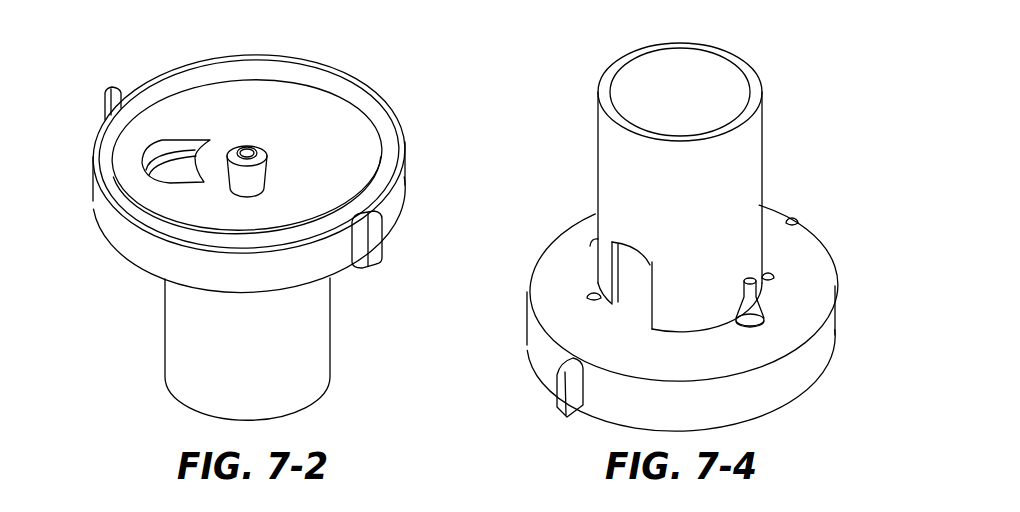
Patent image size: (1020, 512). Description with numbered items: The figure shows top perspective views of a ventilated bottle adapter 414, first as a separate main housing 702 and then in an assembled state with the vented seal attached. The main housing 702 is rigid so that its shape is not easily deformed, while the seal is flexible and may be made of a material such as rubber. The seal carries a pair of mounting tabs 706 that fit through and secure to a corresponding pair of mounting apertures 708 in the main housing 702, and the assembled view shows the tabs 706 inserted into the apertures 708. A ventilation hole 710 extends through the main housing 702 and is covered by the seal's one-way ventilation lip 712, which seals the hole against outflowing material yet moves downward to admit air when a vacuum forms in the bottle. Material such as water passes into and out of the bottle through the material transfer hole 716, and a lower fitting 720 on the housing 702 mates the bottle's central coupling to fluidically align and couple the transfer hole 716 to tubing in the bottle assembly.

In FIG. 7-2, the bottle adapter 414 is at (156, 398).
In FIG. 7-4, the bottle adapter 414 is at (524, 400).
In FIG. 7-4, the main housing 702 is at (780, 132).
In FIG. 7-4, the mounting tabs 706 is at (757, 316).
In FIG. 7-4, the mounting apertures 708 is at (751, 327).
In FIG. 7-4, the ventilation hole 710 is at (590, 294).
In FIG. 7-2, the ventilation lip 712 is at (167, 167).
In FIG. 7-2, the material transfer hole 716 is at (245, 150).
In FIG. 7-2, the lower fitting 720 is at (229, 163).